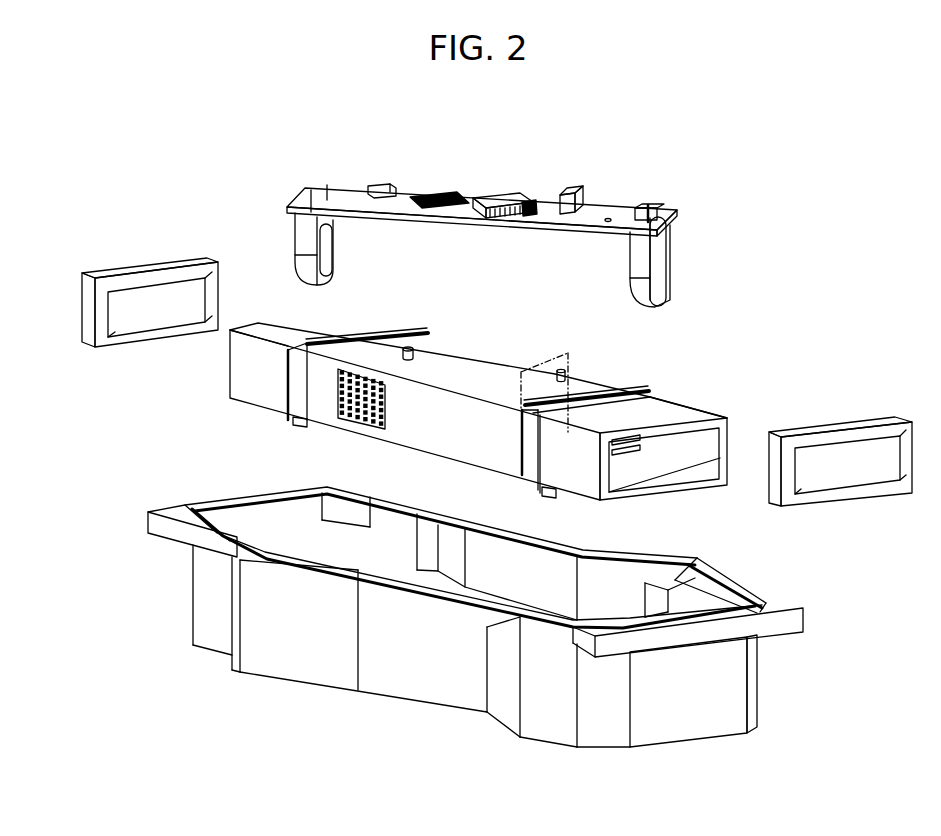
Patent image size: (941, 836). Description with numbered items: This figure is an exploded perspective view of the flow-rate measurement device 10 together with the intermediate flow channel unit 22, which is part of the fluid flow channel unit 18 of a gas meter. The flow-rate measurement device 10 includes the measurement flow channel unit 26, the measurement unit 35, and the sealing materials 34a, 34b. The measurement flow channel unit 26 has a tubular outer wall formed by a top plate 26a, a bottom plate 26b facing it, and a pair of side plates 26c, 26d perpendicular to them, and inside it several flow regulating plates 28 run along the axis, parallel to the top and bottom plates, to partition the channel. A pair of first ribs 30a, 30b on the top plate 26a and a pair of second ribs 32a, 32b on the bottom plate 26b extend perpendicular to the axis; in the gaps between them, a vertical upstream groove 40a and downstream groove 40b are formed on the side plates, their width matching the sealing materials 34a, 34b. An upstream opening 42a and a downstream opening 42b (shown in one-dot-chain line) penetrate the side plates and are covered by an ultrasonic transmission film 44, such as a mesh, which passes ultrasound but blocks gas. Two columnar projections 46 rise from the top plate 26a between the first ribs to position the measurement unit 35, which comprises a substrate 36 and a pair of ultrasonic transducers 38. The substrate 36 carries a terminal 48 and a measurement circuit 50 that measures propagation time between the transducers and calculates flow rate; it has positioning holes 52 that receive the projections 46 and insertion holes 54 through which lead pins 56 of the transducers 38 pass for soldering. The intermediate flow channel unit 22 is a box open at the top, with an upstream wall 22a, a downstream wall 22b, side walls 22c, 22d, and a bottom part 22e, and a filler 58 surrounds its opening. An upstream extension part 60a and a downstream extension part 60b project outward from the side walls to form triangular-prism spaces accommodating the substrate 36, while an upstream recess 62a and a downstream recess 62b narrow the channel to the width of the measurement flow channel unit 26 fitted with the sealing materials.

The flow-rate measurement device 10 is at (245, 165).
The fluid flow channel unit 18 is at (795, 665).
The intermediate flow channel unit 22 is at (655, 745).
The upstream wall 22a is at (262, 512).
The downstream wall 22b is at (698, 725).
The side wall 22c is at (375, 688).
The side wall 22d is at (410, 520).
The bottom part 22e is at (470, 720).
The measurement flow channel unit 26 is at (495, 365).
The top plate 26a is at (500, 372).
The bottom plate 26b is at (722, 485).
The side plate 26c is at (248, 385).
The side plate 26d is at (705, 412).
The flow regulating plate 28 is at (627, 455).
The upstream first rib 30a is at (345, 345).
The downstream first rib 30b is at (640, 390).
The upstream second rib 32a is at (300, 428).
The downstream second rib 32b is at (553, 497).
The sealing material 34a is at (150, 270).
The sealing material 34b is at (845, 432).
The measurement unit 35 is at (405, 186).
The substrate 36 is at (606, 210).
The ultrasonic transducer 38 is at (664, 258).
The upstream groove 40a is at (296, 352).
The downstream groove 40b is at (528, 485).
The upstream opening 42a is at (368, 422).
The downstream opening 42b is at (566, 352).
The ultrasonic transmission film 44 is at (358, 378).
The projection 46 is at (410, 345).
The terminal 48 is at (567, 190).
The measurement circuit 50 is at (510, 198).
The positioning hole 52 is at (407, 190).
The insertion hole 54 is at (650, 218).
The lead pin 56 is at (662, 225).
The filler 58 is at (765, 598).
The upstream extension part 60a is at (230, 660).
The downstream extension part 60b is at (720, 580).
The upstream recess 62a is at (232, 548).
The downstream recess 62b is at (518, 600).